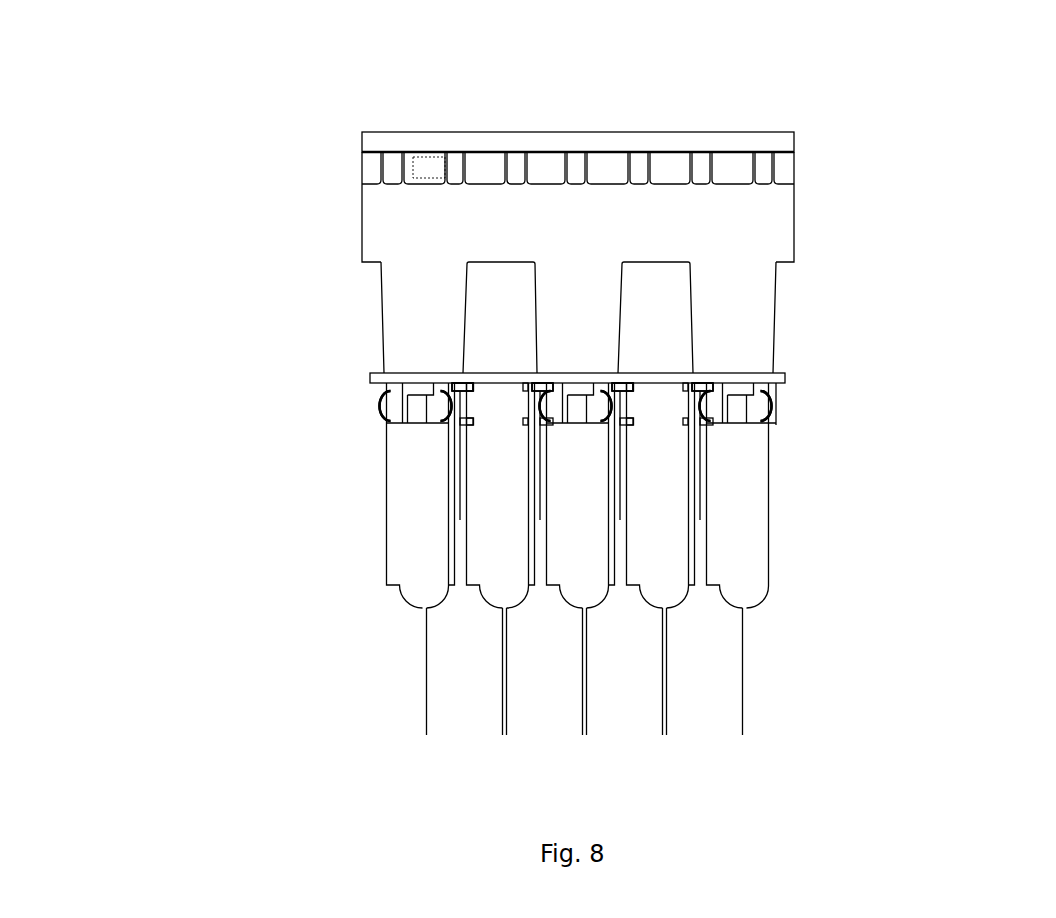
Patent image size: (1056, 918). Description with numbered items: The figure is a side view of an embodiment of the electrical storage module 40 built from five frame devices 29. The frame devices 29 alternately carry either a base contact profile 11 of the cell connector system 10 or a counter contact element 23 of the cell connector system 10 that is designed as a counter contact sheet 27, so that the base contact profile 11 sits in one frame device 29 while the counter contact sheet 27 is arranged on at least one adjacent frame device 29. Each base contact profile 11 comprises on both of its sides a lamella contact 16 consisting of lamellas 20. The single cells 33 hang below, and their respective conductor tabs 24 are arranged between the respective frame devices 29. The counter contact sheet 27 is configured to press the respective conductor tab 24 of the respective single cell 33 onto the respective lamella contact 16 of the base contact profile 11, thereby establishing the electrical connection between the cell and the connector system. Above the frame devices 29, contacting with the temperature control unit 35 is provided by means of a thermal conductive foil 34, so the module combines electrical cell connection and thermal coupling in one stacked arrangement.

The electrical storage module 40 is at (252, 126).
The base contact profile 11 is at (720, 390).
The counter contact element 23 is at (688, 388).
The counter contact sheet 27 is at (582, 387).
The temperature control unit 35 is at (422, 305).
The thermal conductive foil 34 is at (378, 372).
The cell connector system 10 is at (796, 410).
The lamella contact 16 is at (765, 422).
The lamellas 20 is at (576, 406).
The frame devices 29 is at (423, 520).
The single cells 33 is at (476, 676).
The conductor tabs 24 is at (698, 437).